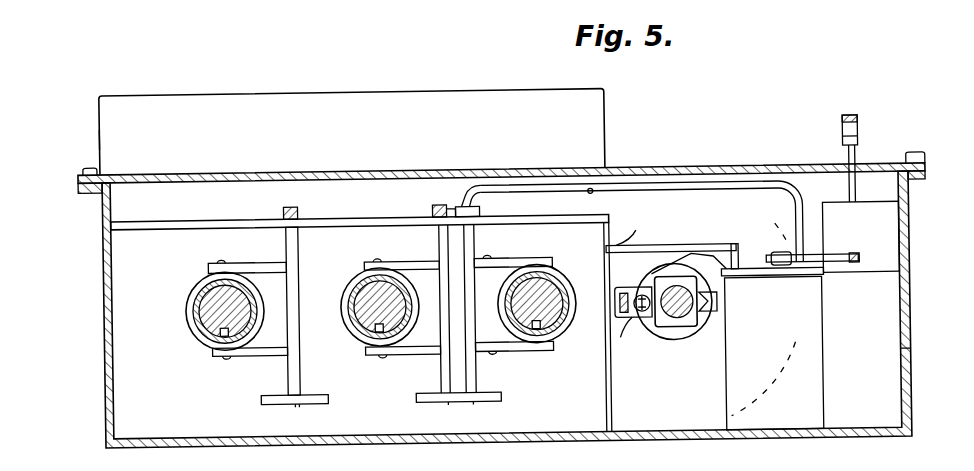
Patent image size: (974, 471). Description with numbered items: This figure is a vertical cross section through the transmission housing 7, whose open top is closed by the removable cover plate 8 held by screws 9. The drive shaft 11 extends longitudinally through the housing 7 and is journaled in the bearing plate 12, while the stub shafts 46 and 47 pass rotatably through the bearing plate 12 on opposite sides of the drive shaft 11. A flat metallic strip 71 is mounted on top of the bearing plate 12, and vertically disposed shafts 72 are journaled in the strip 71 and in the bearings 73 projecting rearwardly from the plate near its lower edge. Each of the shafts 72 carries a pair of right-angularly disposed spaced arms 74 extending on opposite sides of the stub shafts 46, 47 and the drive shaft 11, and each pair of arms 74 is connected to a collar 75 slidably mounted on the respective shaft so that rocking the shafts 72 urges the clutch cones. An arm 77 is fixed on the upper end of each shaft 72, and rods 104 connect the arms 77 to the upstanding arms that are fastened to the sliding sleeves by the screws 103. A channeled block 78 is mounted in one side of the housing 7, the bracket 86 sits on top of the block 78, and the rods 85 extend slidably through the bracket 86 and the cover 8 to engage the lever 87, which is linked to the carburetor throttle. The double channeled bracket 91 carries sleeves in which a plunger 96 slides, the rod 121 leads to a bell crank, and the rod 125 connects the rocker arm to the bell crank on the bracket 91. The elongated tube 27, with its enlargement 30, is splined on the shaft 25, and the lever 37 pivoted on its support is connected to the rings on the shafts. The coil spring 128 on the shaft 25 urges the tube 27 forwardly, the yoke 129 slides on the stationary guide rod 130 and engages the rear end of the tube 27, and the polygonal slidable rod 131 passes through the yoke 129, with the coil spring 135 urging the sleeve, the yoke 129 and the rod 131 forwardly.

The housing 7 is at (90, 143).
The cover plate 8 is at (590, 112).
The screws 9 is at (82, 170).
The drive shaft 11 is at (368, 303).
The bearing plate 12 is at (106, 334).
The shaft 25 is at (677, 326).
The elongated tube 27 is at (700, 290).
The enlargement 30 is at (672, 272).
The lever 37 is at (612, 253).
The stub shaft 46 is at (548, 308).
The stub shaft 47 is at (210, 311).
The flat metallic strip 71 is at (188, 222).
The vertically disposed shafts 72 is at (290, 246).
The bearings 73 is at (320, 398).
The arms 74 is at (255, 265).
The collar 75 is at (200, 297).
The arm 77 is at (286, 212).
The channeled block 78 is at (906, 368).
The rods 85 is at (856, 160).
The bracket 86 is at (885, 216).
The lever 87 is at (855, 125).
The double channeled bracket 91 is at (812, 357).
The plunger 96 is at (717, 309).
The screws 103 is at (840, 265).
The rods 104 is at (524, 190).
The rod 121 is at (700, 253).
The rod 125 is at (770, 262).
The coil spring 128 is at (692, 322).
The yoke 129 is at (660, 346).
The stationary guide rod 130 is at (616, 298).
The slidable rod 131 is at (632, 328).
The coil spring 135 is at (640, 303).